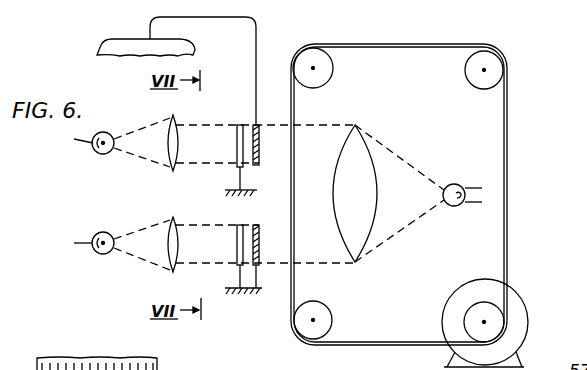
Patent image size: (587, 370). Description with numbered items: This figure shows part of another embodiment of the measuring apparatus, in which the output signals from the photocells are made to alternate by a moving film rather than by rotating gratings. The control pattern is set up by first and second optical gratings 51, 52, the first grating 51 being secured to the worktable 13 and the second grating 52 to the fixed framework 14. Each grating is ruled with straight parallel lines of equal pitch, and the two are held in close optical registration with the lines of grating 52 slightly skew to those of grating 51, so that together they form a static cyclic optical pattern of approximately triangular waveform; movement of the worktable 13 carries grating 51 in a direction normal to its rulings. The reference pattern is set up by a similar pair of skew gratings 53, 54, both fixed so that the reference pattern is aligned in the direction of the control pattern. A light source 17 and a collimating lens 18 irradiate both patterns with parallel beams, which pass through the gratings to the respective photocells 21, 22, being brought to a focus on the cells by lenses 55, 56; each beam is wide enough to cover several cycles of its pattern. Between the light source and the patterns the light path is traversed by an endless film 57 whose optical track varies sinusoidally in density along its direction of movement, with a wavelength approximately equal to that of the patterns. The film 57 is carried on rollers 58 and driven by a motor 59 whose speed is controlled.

The worktable 13 is at (101, 56).
The fixed framework 14 is at (234, 189).
The light source 17 is at (448, 191).
The collimating lens 18 is at (372, 208).
The photocell 21 is at (82, 143).
The photocell 22 is at (102, 232).
The first optical grating 51 is at (259, 160).
The second optical grating 52 is at (240, 125).
The skew grating 53 is at (241, 225).
The skew grating 54 is at (260, 232).
The lens 55 is at (171, 140).
The lens 56 is at (172, 252).
The endless film 57 is at (409, 46).
The rollers 58 is at (329, 317).
The motor 59 is at (479, 282).